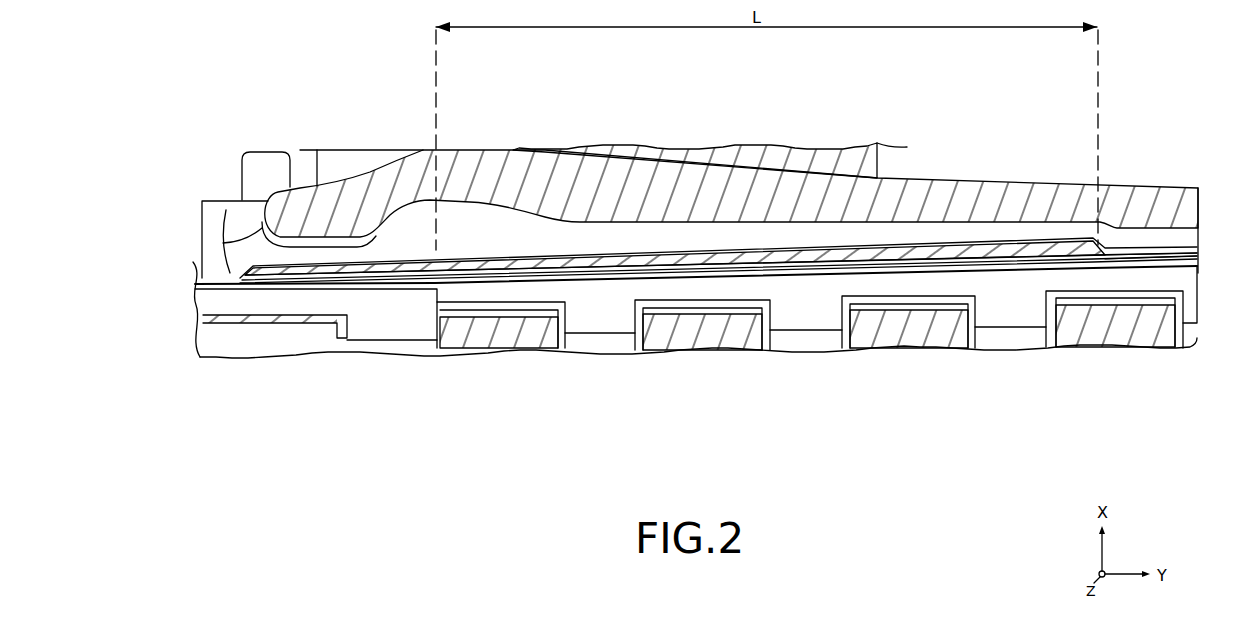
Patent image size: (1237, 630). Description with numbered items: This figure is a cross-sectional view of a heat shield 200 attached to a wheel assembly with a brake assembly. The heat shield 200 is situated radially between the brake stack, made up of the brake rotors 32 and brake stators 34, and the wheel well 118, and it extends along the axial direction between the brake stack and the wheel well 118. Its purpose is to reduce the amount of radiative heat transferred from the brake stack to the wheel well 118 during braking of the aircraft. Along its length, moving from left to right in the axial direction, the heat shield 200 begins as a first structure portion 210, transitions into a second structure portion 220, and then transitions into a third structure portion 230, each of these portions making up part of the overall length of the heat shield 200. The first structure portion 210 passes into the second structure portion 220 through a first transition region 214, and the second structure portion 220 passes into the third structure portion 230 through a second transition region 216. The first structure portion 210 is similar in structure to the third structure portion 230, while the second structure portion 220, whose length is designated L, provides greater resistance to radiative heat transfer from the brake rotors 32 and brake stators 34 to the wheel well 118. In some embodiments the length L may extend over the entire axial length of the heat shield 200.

The brake rotors 32 is at (922, 328).
The brake stators 34 is at (1007, 346).
The wheel well 118 is at (1008, 208).
The heat shield 200 is at (937, 248).
The first structure portion 210 is at (375, 265).
The first transition region 214 is at (438, 262).
The second transition region 216 is at (1108, 248).
The second structure portion 220 is at (575, 252).
The third structure portion 230 is at (1160, 246).